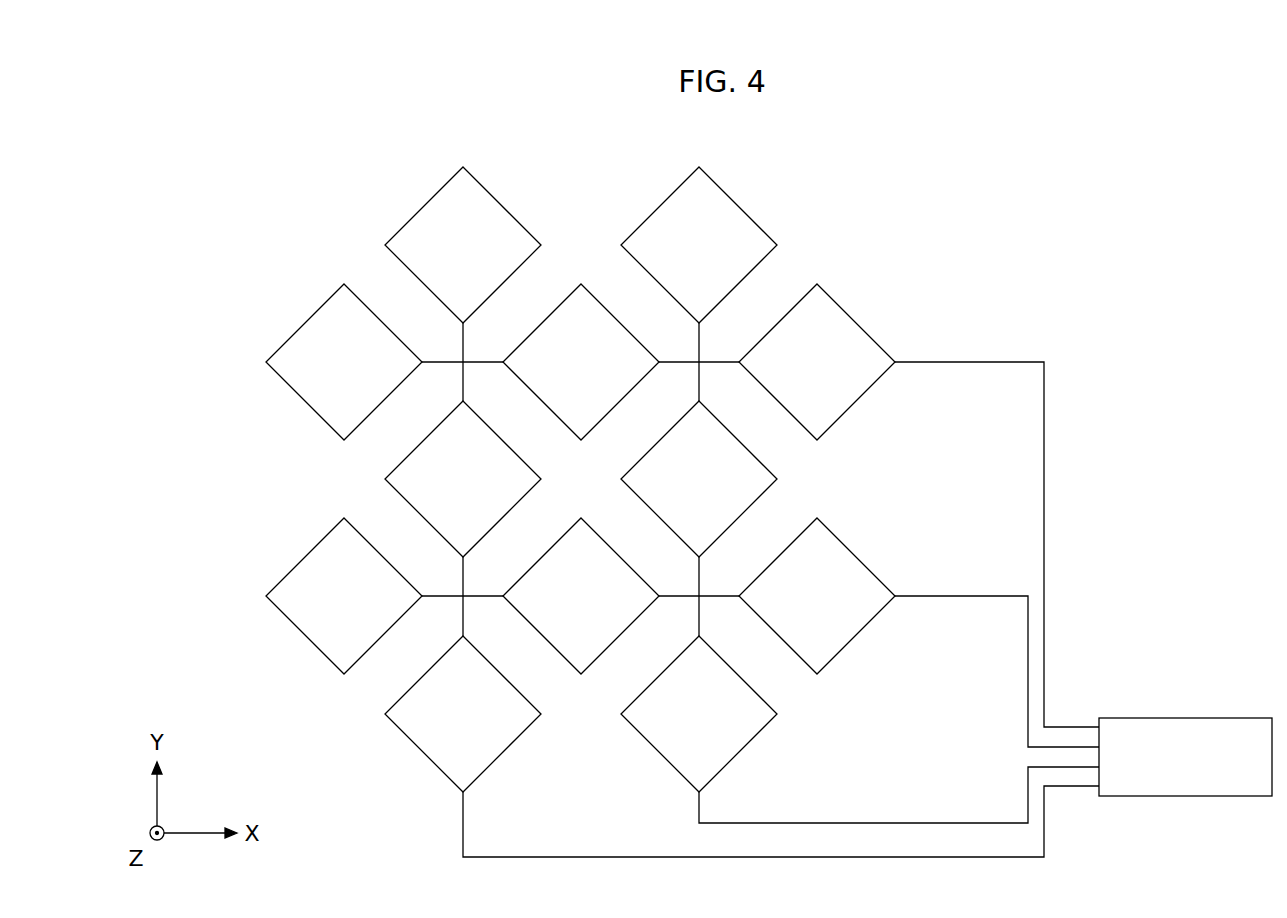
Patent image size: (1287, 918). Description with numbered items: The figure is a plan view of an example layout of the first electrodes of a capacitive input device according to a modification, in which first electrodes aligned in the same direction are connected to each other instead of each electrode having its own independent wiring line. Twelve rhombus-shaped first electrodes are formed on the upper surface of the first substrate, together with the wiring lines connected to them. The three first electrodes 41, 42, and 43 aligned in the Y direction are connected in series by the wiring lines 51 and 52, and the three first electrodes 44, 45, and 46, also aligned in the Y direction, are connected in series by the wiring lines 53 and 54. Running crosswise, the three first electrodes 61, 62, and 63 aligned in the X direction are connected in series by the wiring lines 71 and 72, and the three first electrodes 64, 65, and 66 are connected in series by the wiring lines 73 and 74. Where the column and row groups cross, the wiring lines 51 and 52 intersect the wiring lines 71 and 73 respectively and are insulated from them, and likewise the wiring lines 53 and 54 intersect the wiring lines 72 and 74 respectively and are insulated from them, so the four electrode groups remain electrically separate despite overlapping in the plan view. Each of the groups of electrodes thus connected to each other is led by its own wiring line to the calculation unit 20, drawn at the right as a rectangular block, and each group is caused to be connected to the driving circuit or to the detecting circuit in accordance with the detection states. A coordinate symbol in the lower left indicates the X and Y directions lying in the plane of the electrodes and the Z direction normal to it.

The calculation unit 20 is at (1196, 718).
The first electrode 41 is at (415, 205).
The first electrode 42 is at (402, 462).
The first electrode 43 is at (412, 747).
The first electrode 44 is at (750, 205).
The first electrode 45 is at (762, 464).
The first electrode 46 is at (758, 735).
The wiring line 51 is at (463, 330).
The wiring line 52 is at (463, 566).
The wiring line 53 is at (699, 330).
The wiring line 54 is at (699, 566).
The first electrode 61 is at (320, 307).
The first electrode 62 is at (565, 298).
The first electrode 63 is at (838, 305).
The first electrode 64 is at (320, 542).
The first electrode 65 is at (565, 532).
The first electrode 66 is at (850, 549).
The wiring line 71 is at (436, 366).
The wiring line 72 is at (672, 366).
The wiring line 73 is at (436, 600).
The wiring line 74 is at (672, 600).